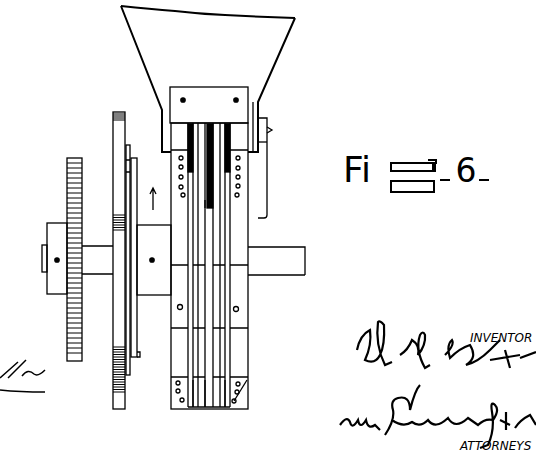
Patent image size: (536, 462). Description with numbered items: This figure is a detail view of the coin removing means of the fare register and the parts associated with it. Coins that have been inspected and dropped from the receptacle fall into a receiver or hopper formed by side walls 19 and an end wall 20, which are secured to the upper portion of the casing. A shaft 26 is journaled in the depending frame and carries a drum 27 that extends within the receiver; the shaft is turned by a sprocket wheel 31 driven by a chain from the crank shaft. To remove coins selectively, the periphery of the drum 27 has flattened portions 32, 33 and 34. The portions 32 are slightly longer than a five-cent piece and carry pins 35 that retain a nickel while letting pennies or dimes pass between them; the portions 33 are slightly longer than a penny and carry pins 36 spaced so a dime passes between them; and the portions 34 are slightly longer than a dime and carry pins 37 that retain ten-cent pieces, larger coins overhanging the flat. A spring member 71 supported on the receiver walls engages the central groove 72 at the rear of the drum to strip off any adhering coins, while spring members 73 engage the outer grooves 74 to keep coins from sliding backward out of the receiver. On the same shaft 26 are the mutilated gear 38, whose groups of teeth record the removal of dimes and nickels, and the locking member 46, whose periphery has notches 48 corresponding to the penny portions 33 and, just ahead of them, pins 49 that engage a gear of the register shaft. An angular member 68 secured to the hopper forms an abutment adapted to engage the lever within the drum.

The side walls 19 is at (140, 51).
The end wall 20 is at (208, 79).
The shaft 26 is at (293, 248).
The drum 27 is at (249, 281).
The sprocket wheel 31 is at (67, 207).
The flattened portions 32 is at (173, 316).
The flattened portions 33 is at (178, 173).
The flattened portions 34 is at (174, 395).
The pins 35 is at (180, 304).
The pins 36 is at (240, 179).
The pins 37 is at (247, 380).
The mutilated gear 38 is at (118, 144).
The locking member 46 is at (130, 148).
The notches 48 is at (127, 167).
The pins 49 is at (134, 159).
The angular member 68 is at (265, 215).
The spring member 71 is at (207, 206).
The central groove 72 is at (210, 408).
The spring members 73 is at (191, 127).
The outer grooves 74 is at (190, 410).